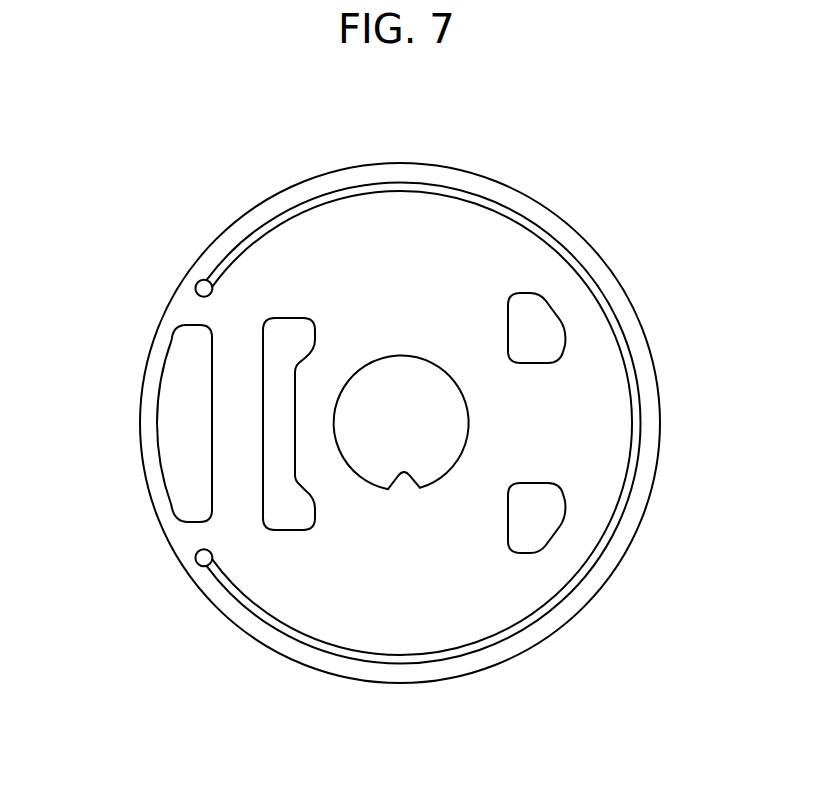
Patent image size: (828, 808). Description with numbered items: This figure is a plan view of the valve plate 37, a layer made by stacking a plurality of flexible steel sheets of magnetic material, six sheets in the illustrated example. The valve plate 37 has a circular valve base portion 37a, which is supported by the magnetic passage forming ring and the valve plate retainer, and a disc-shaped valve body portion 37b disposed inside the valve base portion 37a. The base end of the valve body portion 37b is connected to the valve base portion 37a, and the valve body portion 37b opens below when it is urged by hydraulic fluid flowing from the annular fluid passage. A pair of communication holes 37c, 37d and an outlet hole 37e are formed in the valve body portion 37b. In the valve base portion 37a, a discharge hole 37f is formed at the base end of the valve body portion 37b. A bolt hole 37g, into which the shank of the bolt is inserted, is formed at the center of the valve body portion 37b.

The valve plate 37 is at (305, 141).
The valve base portion 37a is at (633, 330).
The valve body portion 37b is at (445, 231).
The communication hole 37c is at (556, 333).
The communication hole 37d is at (540, 543).
The outlet hole 37e is at (262, 465).
The discharge hole 37f is at (165, 428).
The bolt hole 37g is at (405, 473).